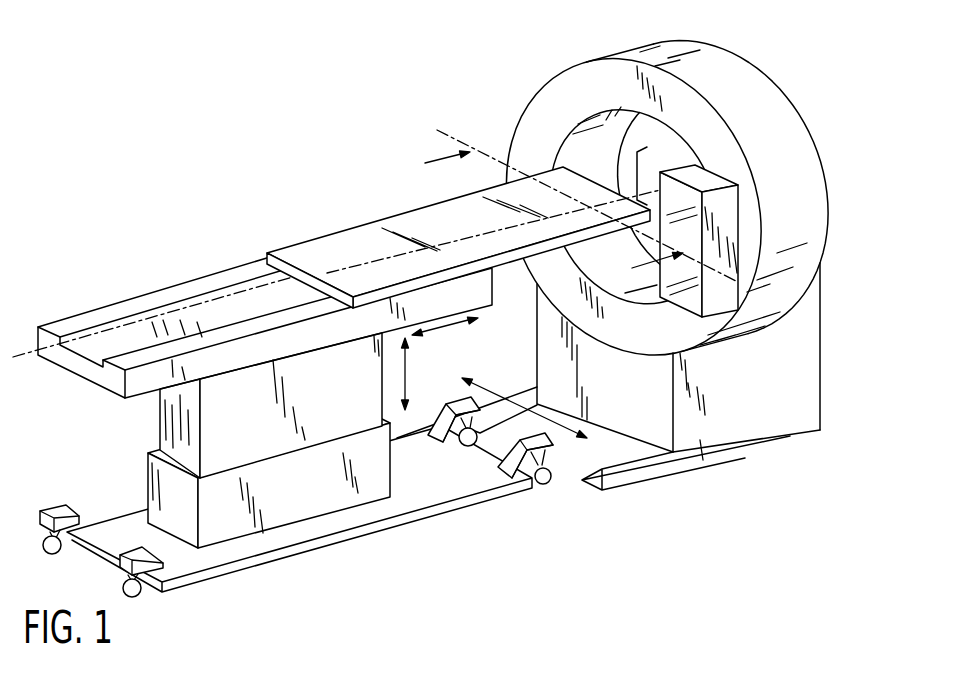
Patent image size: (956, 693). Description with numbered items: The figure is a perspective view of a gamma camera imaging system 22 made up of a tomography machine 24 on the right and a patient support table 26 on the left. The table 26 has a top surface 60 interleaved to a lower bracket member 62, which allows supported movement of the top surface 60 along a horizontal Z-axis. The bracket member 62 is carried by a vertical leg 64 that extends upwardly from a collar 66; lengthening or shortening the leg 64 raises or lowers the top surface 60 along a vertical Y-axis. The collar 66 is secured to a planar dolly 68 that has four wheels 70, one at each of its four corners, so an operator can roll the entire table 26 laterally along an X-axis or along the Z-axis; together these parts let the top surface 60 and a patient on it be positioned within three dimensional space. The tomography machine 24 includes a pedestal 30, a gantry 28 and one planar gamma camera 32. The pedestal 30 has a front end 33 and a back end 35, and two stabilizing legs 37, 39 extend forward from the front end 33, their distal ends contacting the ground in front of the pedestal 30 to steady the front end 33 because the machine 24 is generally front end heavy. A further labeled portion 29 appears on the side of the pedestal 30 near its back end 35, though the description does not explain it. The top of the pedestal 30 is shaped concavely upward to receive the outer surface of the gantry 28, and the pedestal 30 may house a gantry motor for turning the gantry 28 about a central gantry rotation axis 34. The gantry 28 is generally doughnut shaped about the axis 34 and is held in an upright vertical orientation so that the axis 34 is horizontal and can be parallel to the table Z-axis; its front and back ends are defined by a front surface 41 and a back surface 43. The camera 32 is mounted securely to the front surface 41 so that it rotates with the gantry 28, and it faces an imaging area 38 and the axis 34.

The imaging system 22 is at (408, 82).
The tomography machine 24 is at (714, 70).
The patient support table 26 is at (175, 280).
The gantry 28 is at (783, 162).
The gantry housing side panel 29 is at (820, 340).
The pedestal 30 is at (700, 438).
The planar gamma camera 32 is at (708, 175).
The front end 33 is at (653, 435).
The central gantry rotation axis 34 is at (482, 232).
The back end 35 is at (820, 410).
The stabilizing leg 37 is at (616, 480).
The imaging area 38 is at (624, 198).
The stabilizing leg 39 is at (521, 396).
The front surface 41 is at (750, 234).
The back surface 43 is at (766, 74).
The top surface 60 is at (356, 237).
The lower bracket member 62 is at (84, 317).
The vertical leg 64 is at (197, 416).
The collar 66 is at (196, 497).
The planar dolly 68 is at (407, 498).
The wheels 70 is at (520, 478).